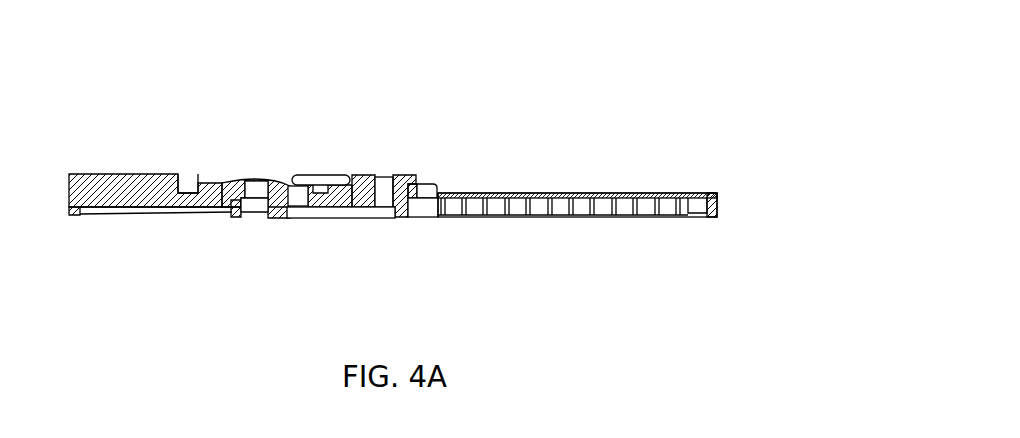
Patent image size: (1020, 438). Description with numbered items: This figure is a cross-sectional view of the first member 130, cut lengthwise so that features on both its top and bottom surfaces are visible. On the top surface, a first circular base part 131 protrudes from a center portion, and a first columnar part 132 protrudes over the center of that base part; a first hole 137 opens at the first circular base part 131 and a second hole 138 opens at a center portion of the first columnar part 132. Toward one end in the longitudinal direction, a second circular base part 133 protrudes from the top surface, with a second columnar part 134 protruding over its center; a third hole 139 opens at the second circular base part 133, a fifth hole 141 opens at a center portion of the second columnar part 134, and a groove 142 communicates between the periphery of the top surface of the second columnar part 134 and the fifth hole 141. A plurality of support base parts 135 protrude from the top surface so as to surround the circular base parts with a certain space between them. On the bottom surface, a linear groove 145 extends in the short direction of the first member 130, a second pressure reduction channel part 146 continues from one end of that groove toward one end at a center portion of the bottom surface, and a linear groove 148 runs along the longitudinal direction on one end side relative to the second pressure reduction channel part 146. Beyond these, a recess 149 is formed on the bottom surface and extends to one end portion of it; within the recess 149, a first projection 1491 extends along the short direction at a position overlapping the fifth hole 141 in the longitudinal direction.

The first member 130 is at (728, 68).
The first circular base part 131 is at (350, 177).
The first columnar part 132 is at (397, 177).
The second circular base part 133 is at (200, 176).
The second columnar part 134 is at (274, 178).
The support base part 135 is at (104, 174).
The first hole 137 is at (423, 184).
The second hole 138 is at (378, 176).
The third hole 139 is at (297, 174).
The fifth hole 141 is at (252, 178).
The groove 142 is at (234, 177).
The linear groove 145 is at (698, 214).
The second pressure reduction channel part 146 is at (585, 217).
The linear groove 148 is at (347, 218).
The recess 149 is at (155, 213).
The first projection 1491 is at (242, 218).